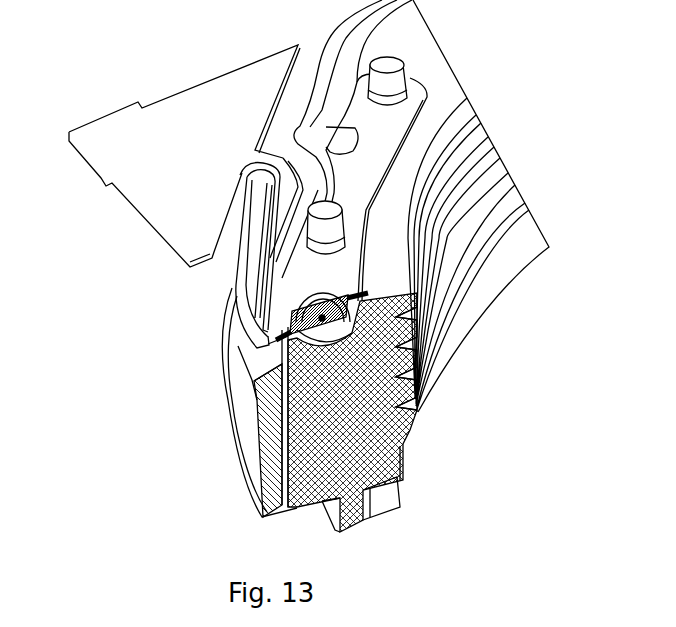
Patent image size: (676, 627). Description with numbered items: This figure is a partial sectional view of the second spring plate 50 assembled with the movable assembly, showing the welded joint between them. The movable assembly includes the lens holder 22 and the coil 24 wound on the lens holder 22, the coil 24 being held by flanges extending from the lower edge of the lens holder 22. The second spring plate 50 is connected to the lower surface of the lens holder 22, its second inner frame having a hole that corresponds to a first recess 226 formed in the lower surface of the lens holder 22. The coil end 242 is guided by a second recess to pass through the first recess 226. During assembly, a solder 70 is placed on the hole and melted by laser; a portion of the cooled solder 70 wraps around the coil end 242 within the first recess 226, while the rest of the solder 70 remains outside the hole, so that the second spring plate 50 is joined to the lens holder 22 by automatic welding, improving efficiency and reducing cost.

The lens holder 22 is at (385, 246).
The coil 24 is at (245, 452).
The coil end 242 is at (418, 362).
The first recess 226 is at (262, 364).
The second spring plate 50 is at (298, 307).
The solder 70 is at (320, 302).